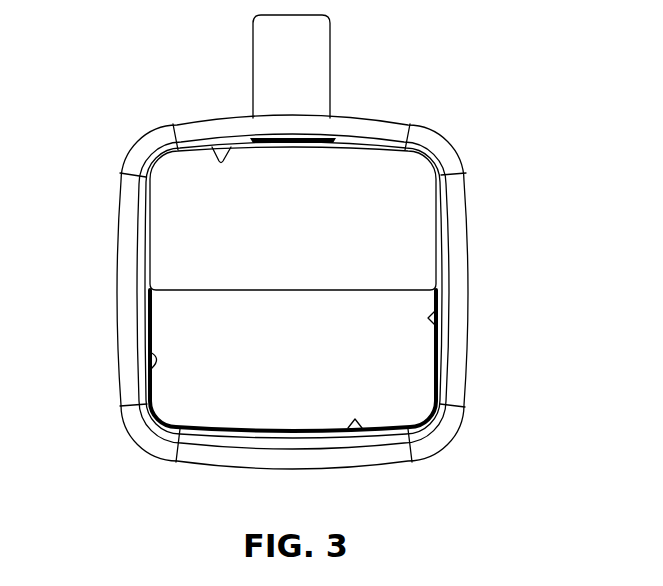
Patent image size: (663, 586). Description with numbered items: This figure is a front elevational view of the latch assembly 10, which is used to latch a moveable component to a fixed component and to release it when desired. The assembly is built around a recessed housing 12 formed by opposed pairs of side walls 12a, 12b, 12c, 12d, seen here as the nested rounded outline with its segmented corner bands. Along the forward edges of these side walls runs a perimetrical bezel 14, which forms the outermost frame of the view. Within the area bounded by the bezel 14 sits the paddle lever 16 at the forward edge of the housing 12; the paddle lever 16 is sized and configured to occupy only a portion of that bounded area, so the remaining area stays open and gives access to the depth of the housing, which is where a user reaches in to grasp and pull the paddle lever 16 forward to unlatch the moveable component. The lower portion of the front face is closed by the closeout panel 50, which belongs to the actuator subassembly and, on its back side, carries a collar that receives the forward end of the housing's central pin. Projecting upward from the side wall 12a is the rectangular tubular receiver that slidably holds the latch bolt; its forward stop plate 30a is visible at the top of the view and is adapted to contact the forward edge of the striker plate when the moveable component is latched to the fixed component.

The latch assembly 10 is at (474, 101).
The recessed housing 12 is at (472, 389).
The side wall 12a is at (212, 150).
The side wall 12b is at (150, 350).
The side wall 12c is at (361, 430).
The side wall 12d is at (435, 328).
The perimetrical bezel 14 is at (118, 237).
The paddle lever 16 is at (307, 226).
The forward stop plate 30a is at (318, 38).
The closeout panel 50 is at (264, 371).